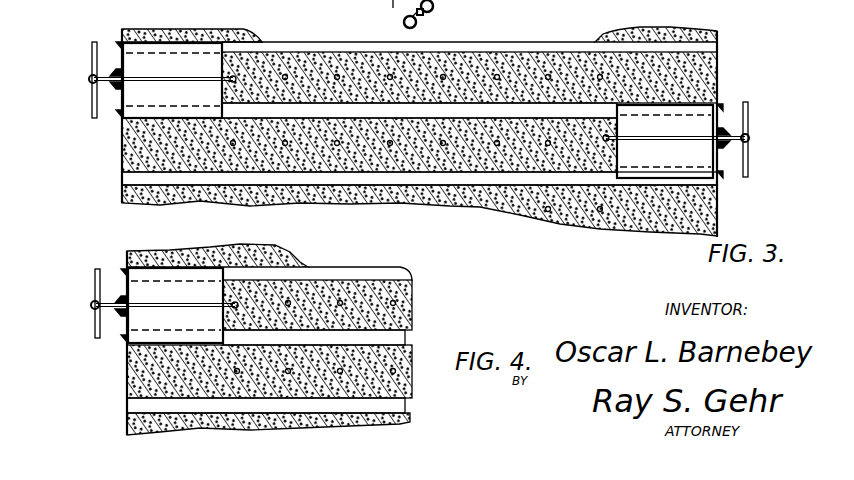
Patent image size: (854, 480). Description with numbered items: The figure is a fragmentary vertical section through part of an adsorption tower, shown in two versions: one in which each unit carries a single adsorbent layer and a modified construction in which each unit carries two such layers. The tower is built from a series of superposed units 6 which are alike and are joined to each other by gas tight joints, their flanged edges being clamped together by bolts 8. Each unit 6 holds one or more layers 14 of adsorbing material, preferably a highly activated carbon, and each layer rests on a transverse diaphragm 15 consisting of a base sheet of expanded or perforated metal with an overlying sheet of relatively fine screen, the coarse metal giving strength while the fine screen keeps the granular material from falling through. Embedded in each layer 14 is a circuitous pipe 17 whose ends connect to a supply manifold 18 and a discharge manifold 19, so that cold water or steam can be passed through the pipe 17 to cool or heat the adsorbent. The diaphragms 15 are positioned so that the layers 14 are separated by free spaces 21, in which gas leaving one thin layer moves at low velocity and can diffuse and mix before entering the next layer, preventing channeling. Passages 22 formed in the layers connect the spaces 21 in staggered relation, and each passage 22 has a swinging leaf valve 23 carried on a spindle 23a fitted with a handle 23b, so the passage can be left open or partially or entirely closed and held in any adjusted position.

In FIG. 3, the unit 6 is at (120, 151).
In FIG. 4, the unit 6 is at (127, 355).
In FIG. 3, the bolt 8 is at (118, 43).
In FIG. 4, the bolt 8 is at (127, 408).
In FIG. 3, the layer of adsorbing material 14 is at (678, 51).
In FIG. 4, the layer of adsorbing material 14 is at (413, 312).
In FIG. 3, the diaphragm 15 is at (421, 104).
In FIG. 4, the diaphragm 15 is at (385, 332).
In FIG. 3, the pipe 17 is at (549, 74).
In FIG. 4, the pipe 17 is at (347, 290).
In FIG. 3, the supply manifold 18 is at (403, 17).
In FIG. 3, the discharge manifold 19 is at (434, 7).
In FIG. 3, the free space 21 is at (265, 112).
In FIG. 4, the free space 21 is at (308, 337).
In FIG. 3, the passage 22 is at (177, 52).
In FIG. 4, the passage 22 is at (179, 281).
In FIG. 3, the swinging leaf valve 23 is at (155, 47).
In FIG. 4, the swinging leaf valve 23 is at (152, 272).
In FIG. 3, the spindle 23a is at (760, 86).
In FIG. 4, the spindle 23a is at (140, 308).
In FIG. 3, the handle 23b is at (773, 110).
In FIG. 4, the handle 23b is at (93, 290).